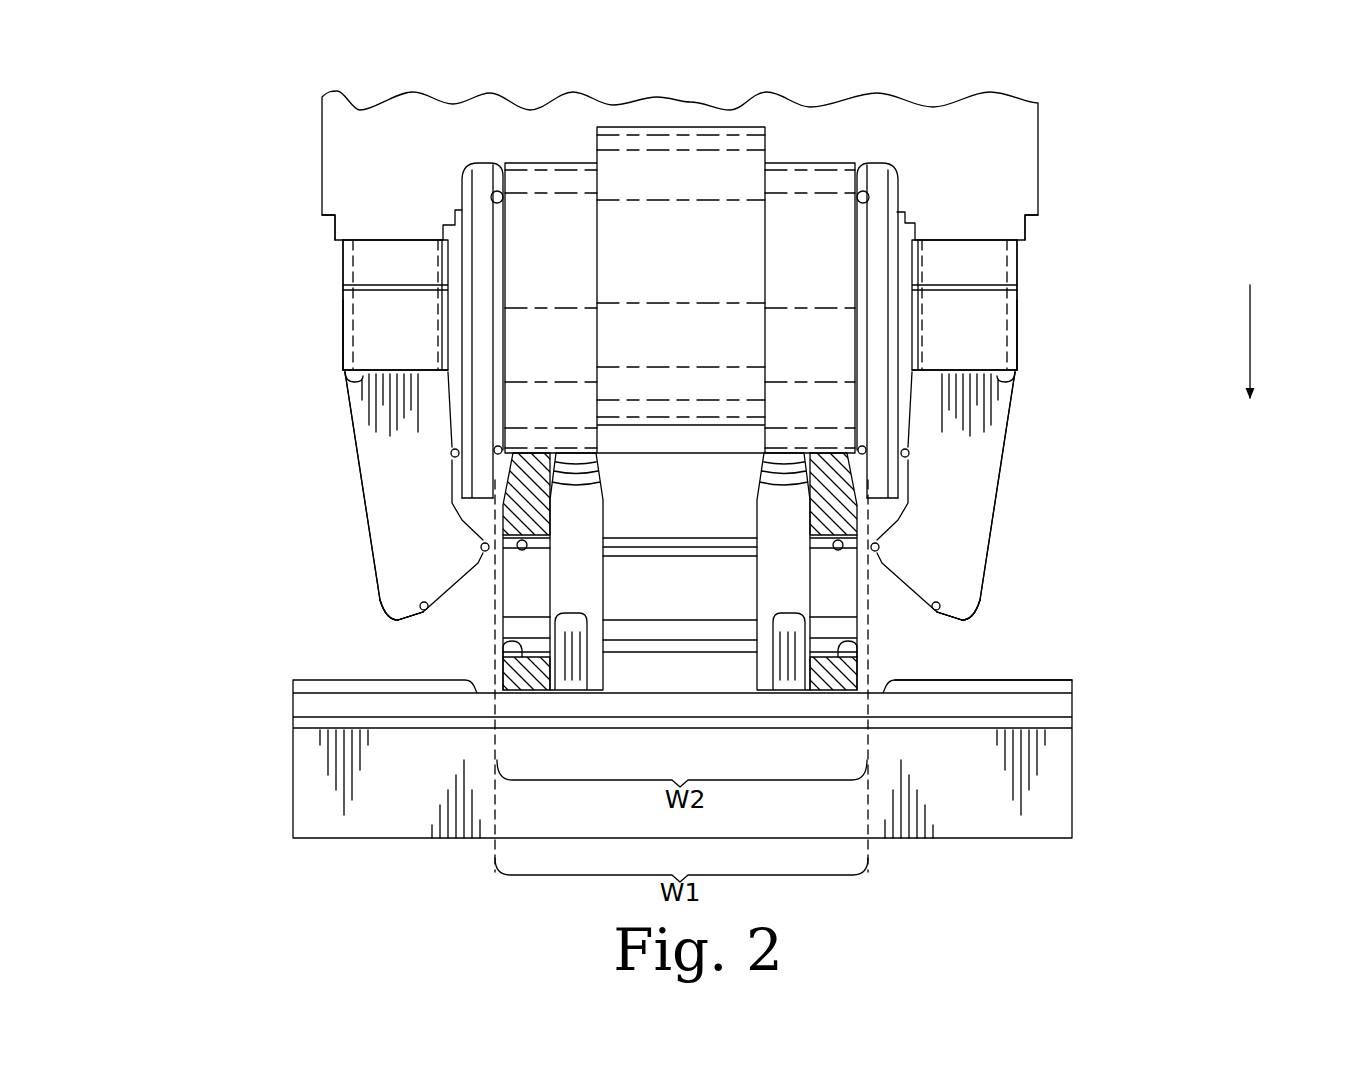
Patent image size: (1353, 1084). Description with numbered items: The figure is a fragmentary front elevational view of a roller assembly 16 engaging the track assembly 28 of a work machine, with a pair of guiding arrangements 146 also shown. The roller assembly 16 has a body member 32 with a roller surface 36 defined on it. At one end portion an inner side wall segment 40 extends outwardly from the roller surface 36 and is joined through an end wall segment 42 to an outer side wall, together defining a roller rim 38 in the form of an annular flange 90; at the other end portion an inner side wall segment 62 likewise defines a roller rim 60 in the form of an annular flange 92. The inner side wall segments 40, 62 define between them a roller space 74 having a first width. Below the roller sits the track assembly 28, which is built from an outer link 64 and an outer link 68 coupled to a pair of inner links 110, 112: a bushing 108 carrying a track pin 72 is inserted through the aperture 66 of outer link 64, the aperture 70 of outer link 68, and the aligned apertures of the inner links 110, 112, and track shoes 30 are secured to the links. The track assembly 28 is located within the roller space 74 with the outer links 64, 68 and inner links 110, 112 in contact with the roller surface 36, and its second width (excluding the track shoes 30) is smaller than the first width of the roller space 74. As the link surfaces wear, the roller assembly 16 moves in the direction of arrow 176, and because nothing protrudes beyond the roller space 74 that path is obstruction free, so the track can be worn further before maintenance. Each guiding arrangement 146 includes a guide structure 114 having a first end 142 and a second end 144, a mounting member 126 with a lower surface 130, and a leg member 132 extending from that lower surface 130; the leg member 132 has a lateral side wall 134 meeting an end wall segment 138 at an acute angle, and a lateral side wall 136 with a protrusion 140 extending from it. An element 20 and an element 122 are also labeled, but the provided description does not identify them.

The roller assembly 16 is at (866, 134).
The collar 20 is at (345, 272).
The track assembly 28 is at (1087, 545).
The track shoes 30 is at (330, 825).
The body member 32 is at (648, 428).
The roller surface 36 is at (838, 228).
The roller rim 38 is at (878, 246).
The inner side wall segment 40 is at (888, 463).
The end wall segment 42 is at (882, 166).
The roller rim 60 is at (487, 166).
The inner side wall segment 62 is at (468, 458).
The outer link 64 is at (833, 549).
The aperture 66 is at (860, 660).
The outer link 68 is at (528, 549).
The aperture 70 is at (505, 650).
The track pin 72 is at (868, 603).
The roller space 74 is at (491, 199).
The annular flange 90 is at (882, 336).
The annular flange 92 is at (490, 268).
The bushing 108 is at (702, 545).
The inner link 110 is at (766, 543).
The inner link 112 is at (566, 543).
The guide structure 114 is at (242, 230).
The arm tip 122 is at (358, 608).
The mounting member 126 is at (345, 325).
The lower surface 130 is at (356, 378).
The leg member 132 is at (388, 486).
The lateral side wall 134 is at (366, 500).
The lateral side wall 136 is at (450, 452).
The end wall segment 138 is at (424, 602).
The protrusion 140 is at (480, 545).
The first end 142 is at (287, 293).
The second end 144 is at (384, 632).
The guiding arrangement 146 is at (277, 171).
The arrow 176 is at (1252, 305).